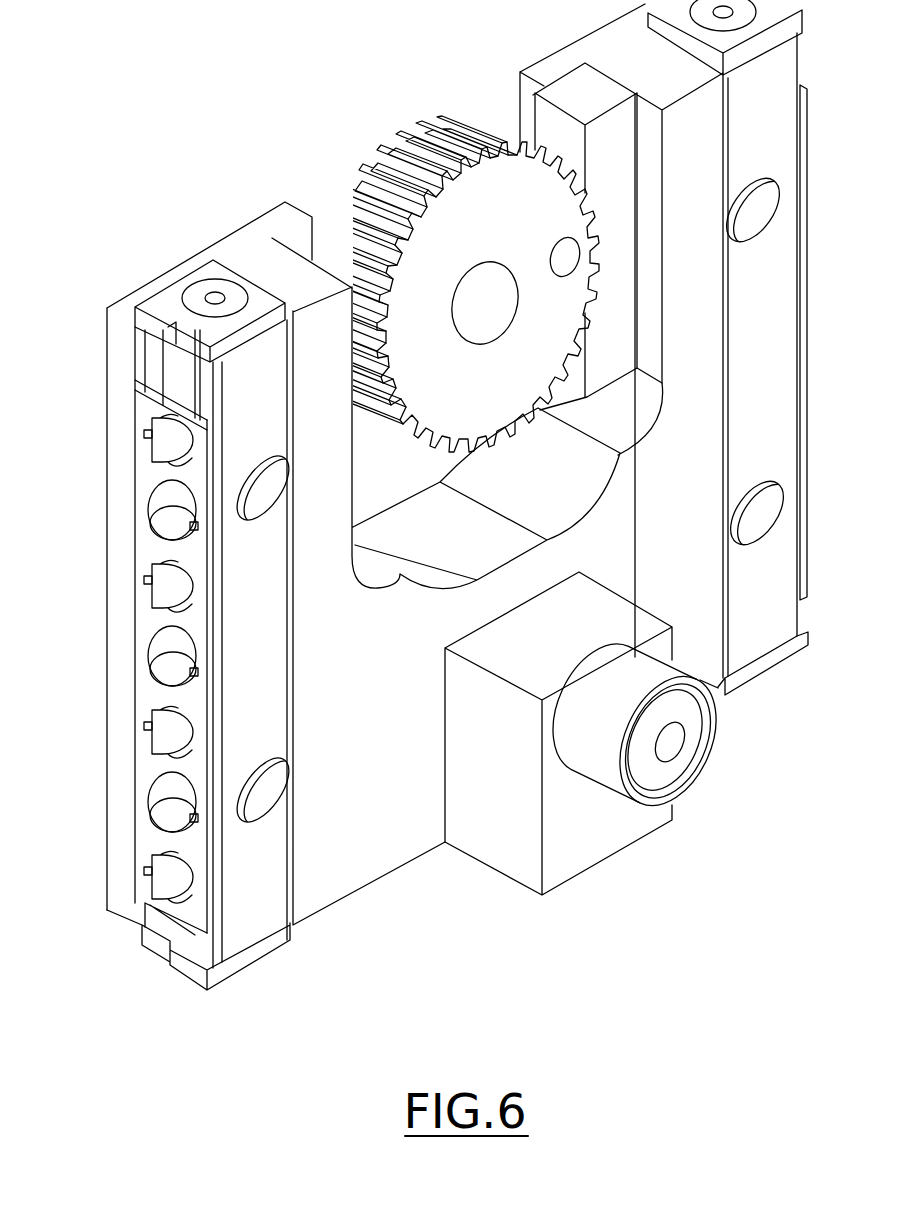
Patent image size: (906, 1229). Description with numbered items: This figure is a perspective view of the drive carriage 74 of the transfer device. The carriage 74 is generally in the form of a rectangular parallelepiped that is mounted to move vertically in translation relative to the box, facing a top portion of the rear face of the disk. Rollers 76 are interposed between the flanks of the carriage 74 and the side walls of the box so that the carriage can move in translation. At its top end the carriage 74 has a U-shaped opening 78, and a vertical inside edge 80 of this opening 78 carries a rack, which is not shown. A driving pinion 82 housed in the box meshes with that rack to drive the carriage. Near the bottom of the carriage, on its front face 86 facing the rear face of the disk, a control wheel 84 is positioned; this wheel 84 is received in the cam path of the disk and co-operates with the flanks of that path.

The drive carriage 74 is at (163, 1040).
The rollers 76 is at (145, 469).
The U-shaped opening 78 is at (338, 168).
The vertical inside edge 80 is at (543, 123).
The driving pinion 82 is at (440, 147).
The control wheel 84 is at (700, 763).
The front face 86 is at (360, 833).